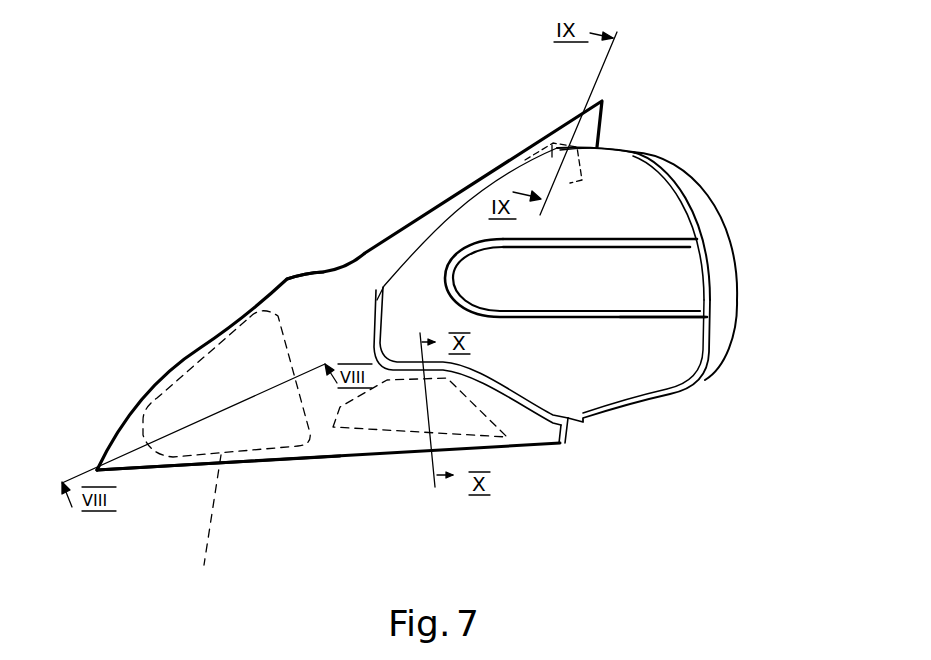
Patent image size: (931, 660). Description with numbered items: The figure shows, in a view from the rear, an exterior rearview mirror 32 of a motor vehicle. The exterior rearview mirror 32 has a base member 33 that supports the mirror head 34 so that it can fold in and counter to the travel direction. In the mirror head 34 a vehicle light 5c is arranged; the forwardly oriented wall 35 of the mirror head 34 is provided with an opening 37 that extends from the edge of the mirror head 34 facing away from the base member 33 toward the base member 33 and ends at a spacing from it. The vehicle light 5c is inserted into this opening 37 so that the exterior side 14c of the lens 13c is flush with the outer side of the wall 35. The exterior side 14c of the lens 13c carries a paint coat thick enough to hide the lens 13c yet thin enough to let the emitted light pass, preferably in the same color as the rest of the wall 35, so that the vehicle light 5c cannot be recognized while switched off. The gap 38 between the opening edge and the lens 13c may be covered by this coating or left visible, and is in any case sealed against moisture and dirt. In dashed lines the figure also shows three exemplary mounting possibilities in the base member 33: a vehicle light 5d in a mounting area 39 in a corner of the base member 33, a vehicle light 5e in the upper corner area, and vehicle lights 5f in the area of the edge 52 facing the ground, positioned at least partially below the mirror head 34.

The exterior rearview mirror 32 is at (400, 169).
The base member 33 is at (292, 300).
The mirror head 34 is at (634, 204).
The forwardly oriented wall 35 is at (610, 380).
The opening 37 is at (657, 242).
The gap 38 is at (640, 318).
The mounting area 39 is at (256, 432).
The edge 52 is at (157, 472).
The vehicle light 5c is at (672, 287).
The vehicle light 5d is at (212, 530).
The vehicle light 5e is at (552, 144).
The vehicle light 5f is at (385, 412).
The lens 13c is at (582, 270).
The exterior side 14c is at (660, 305).